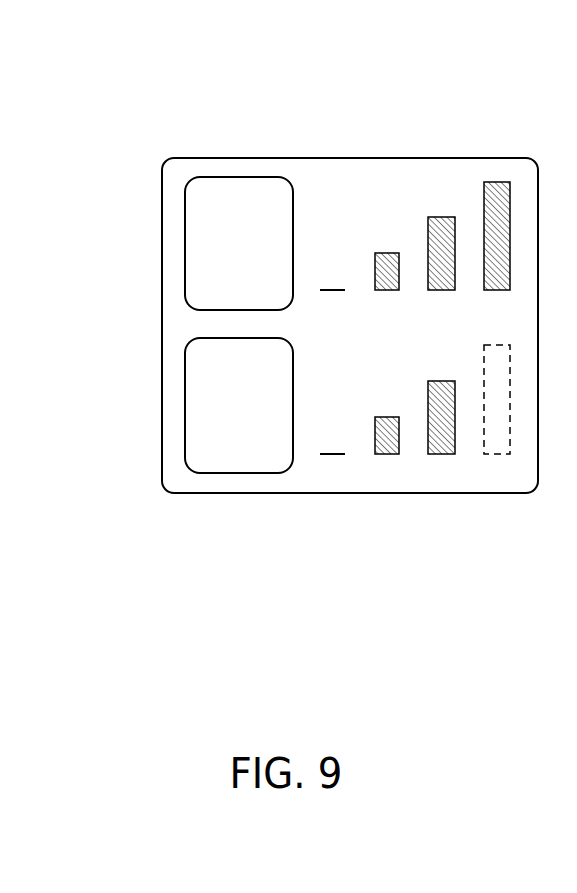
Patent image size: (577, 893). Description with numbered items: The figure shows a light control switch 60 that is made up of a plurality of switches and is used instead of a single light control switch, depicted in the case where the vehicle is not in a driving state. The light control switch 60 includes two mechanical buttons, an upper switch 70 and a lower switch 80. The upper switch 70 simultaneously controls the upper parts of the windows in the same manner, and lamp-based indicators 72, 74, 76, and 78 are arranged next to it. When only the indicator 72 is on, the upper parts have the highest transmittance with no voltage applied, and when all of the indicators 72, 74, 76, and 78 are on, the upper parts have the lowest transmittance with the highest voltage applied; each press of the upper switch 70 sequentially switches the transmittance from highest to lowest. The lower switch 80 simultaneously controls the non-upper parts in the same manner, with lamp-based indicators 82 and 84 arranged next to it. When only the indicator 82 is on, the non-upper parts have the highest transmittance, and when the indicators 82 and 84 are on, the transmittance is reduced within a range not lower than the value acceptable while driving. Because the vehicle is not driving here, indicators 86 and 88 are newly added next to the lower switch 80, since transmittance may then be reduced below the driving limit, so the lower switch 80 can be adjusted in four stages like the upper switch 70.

The light control switch 60 is at (233, 154).
The upper switch 70 is at (185, 240).
The indicator 72 is at (337, 288).
The indicator 74 is at (387, 253).
The indicator 76 is at (439, 217).
The indicator 78 is at (499, 182).
The lower switch 80 is at (185, 403).
The indicator 82 is at (335, 455).
The indicator 84 is at (388, 455).
The indicator 86 is at (440, 455).
The indicator 88 is at (497, 455).